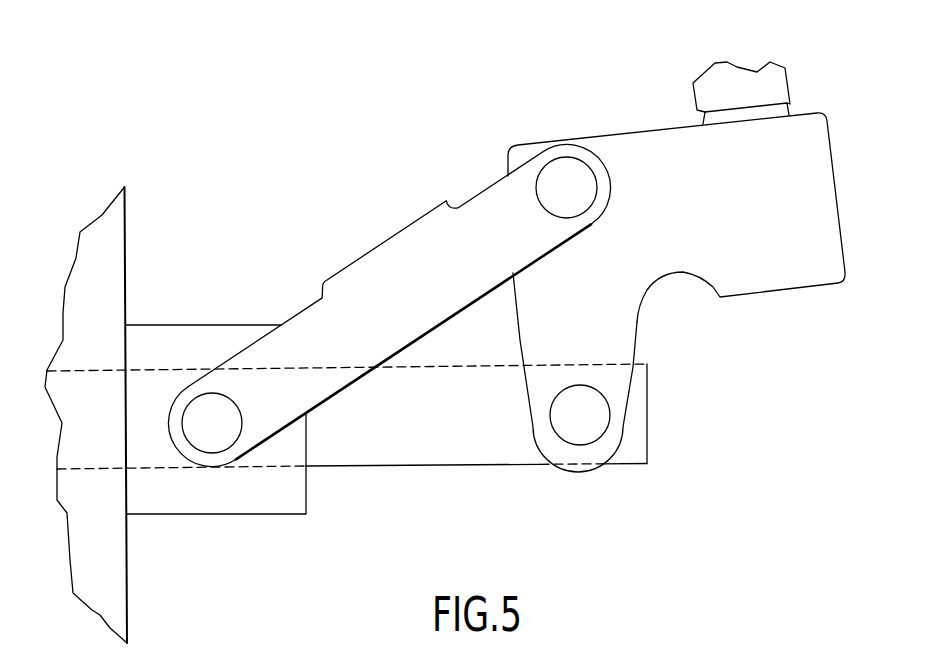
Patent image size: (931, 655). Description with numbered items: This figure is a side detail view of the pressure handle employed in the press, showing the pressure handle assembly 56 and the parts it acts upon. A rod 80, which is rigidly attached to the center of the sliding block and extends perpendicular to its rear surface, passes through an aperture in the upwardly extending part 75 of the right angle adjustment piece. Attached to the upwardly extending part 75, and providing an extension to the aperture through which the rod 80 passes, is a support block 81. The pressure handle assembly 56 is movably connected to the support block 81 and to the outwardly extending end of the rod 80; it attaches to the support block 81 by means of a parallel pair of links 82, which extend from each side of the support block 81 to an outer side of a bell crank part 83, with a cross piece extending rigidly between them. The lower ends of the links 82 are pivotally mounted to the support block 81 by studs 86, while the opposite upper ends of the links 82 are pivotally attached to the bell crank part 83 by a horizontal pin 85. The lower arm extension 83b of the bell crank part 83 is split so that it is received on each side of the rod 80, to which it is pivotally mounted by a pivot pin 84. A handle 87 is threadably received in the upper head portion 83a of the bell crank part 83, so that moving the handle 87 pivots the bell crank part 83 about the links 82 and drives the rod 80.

The pressure handle assembly 56 is at (284, 157).
The upwardly extending part 75 is at (95, 580).
The rod 80 is at (418, 448).
The support block 81 is at (230, 498).
The links 82 is at (418, 306).
The bell crank part 83 is at (602, 133).
The upper head portion 83a is at (792, 209).
The lower arm extension 83b is at (600, 359).
The pivot pin 84 is at (595, 429).
The horizontal pin 85 is at (583, 202).
The studs 86 is at (227, 436).
The handle 87 is at (763, 90).